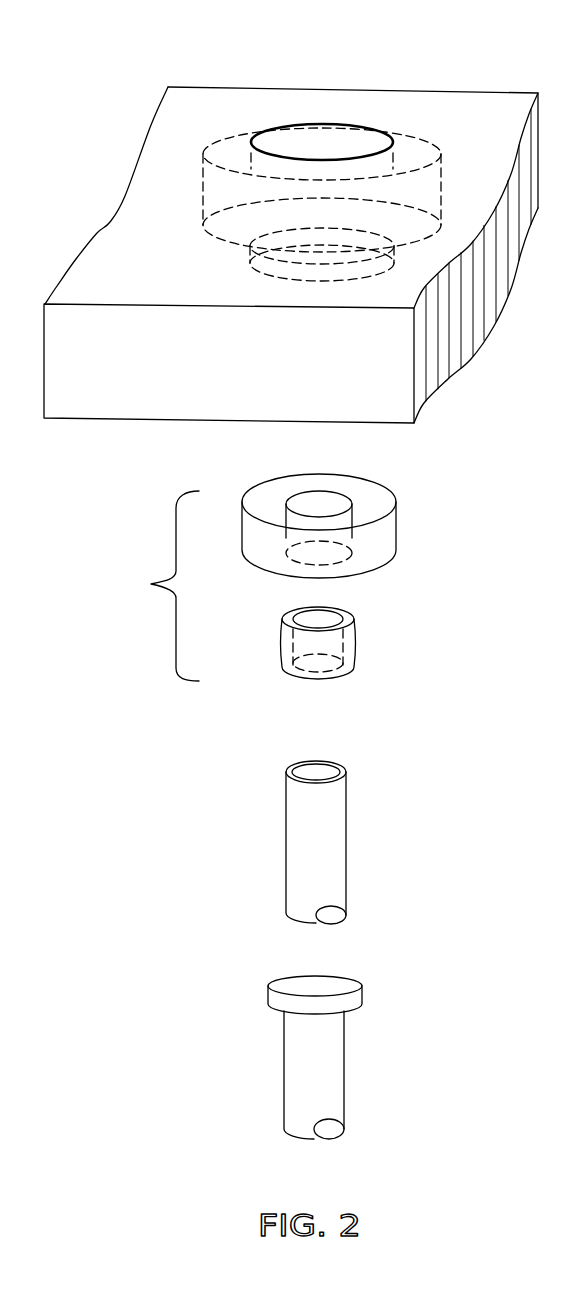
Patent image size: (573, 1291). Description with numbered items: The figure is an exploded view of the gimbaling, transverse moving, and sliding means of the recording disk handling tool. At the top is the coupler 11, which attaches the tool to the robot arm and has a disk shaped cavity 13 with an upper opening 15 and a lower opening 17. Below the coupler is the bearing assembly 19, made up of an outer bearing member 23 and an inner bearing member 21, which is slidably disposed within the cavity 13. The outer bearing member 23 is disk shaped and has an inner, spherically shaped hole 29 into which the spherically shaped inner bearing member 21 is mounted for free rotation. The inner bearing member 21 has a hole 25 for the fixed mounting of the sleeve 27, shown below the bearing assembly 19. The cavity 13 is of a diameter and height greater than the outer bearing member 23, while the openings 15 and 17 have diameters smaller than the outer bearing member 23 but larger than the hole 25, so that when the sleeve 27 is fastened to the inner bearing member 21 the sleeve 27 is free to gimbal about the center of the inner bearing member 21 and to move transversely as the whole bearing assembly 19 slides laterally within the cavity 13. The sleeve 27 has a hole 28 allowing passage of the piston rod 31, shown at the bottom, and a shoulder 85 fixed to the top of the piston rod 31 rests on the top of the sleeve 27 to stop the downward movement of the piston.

The coupler 11 is at (96, 232).
The disk shaped cavity 13 is at (297, 213).
The upper opening 15 is at (318, 148).
The lower opening 17 is at (317, 283).
The bearing assembly 19 is at (138, 585).
The inner bearing member 21 is at (353, 647).
The outer bearing member 23 is at (395, 528).
The hole 25 is at (320, 623).
The sleeve 27 is at (345, 843).
The hole 28 is at (315, 772).
The spherically shaped hole 29 is at (328, 505).
The piston rod 31 is at (343, 1070).
The shoulder 85 is at (358, 983).